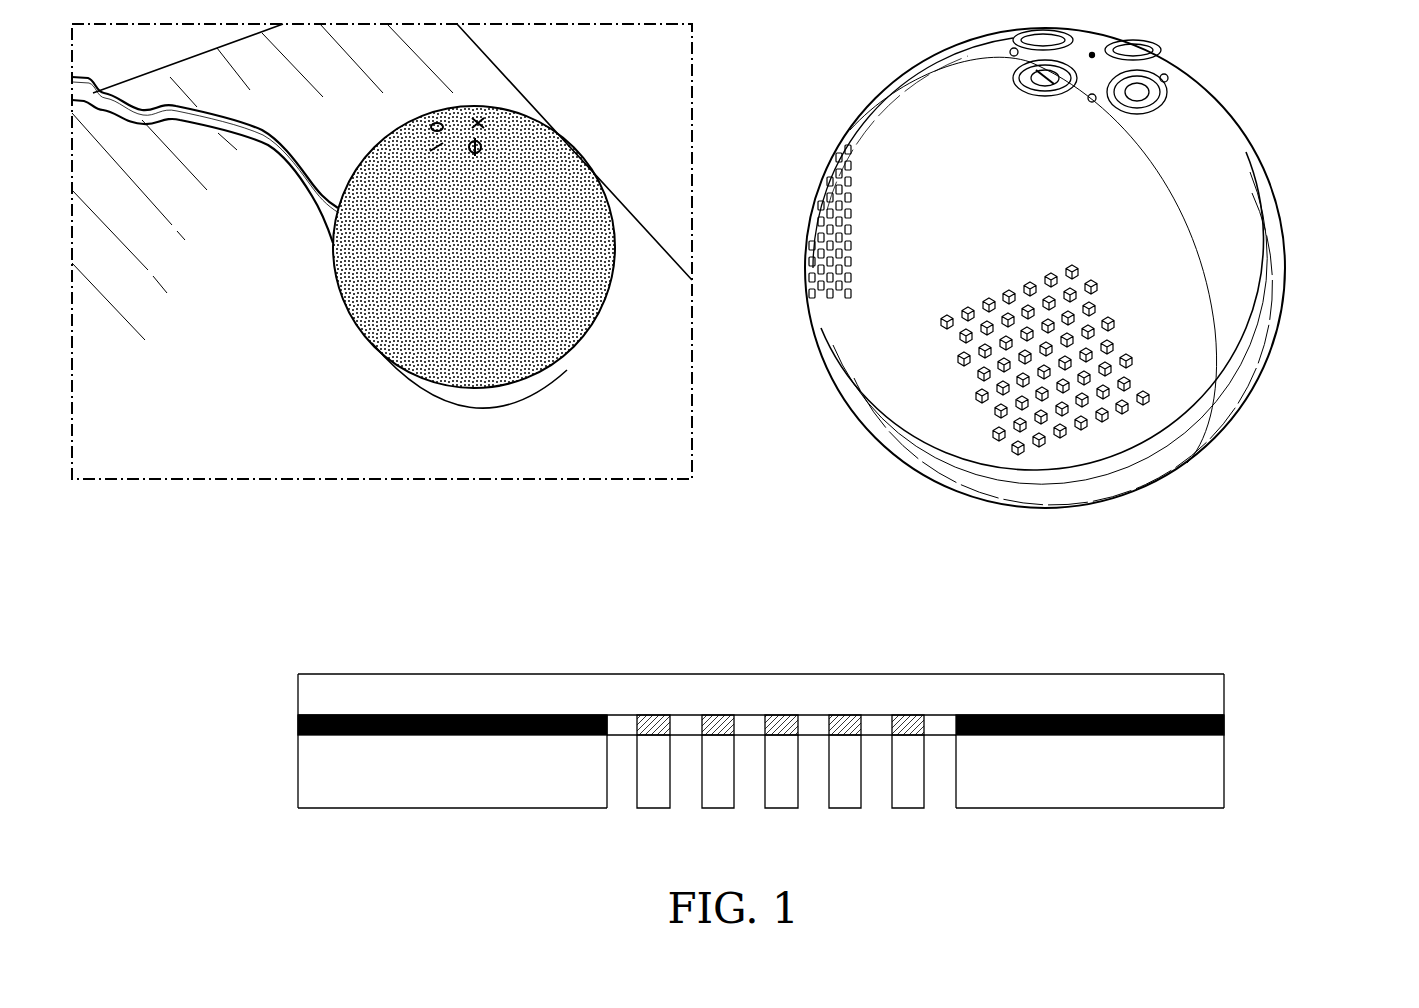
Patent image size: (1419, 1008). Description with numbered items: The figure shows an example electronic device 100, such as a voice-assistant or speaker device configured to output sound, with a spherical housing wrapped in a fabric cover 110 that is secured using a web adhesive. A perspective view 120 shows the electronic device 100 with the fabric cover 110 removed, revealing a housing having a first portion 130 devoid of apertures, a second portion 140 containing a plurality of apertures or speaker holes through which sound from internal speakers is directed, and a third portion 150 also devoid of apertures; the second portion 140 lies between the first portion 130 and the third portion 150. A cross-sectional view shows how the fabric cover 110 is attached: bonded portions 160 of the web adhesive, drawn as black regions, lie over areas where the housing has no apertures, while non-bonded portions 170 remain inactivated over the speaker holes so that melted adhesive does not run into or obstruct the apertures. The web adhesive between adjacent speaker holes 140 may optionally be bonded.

The electronic device 100 is at (575, 101).
The fabric cover 110 is at (330, 247).
The perspective view 120 is at (1261, 46).
The first portion 130 is at (923, 376).
The second portion 140 is at (1002, 285).
The third portion 150 is at (1147, 250).
The bonded portions 160 is at (1305, 653).
The non-bonded portions 170 is at (688, 722).